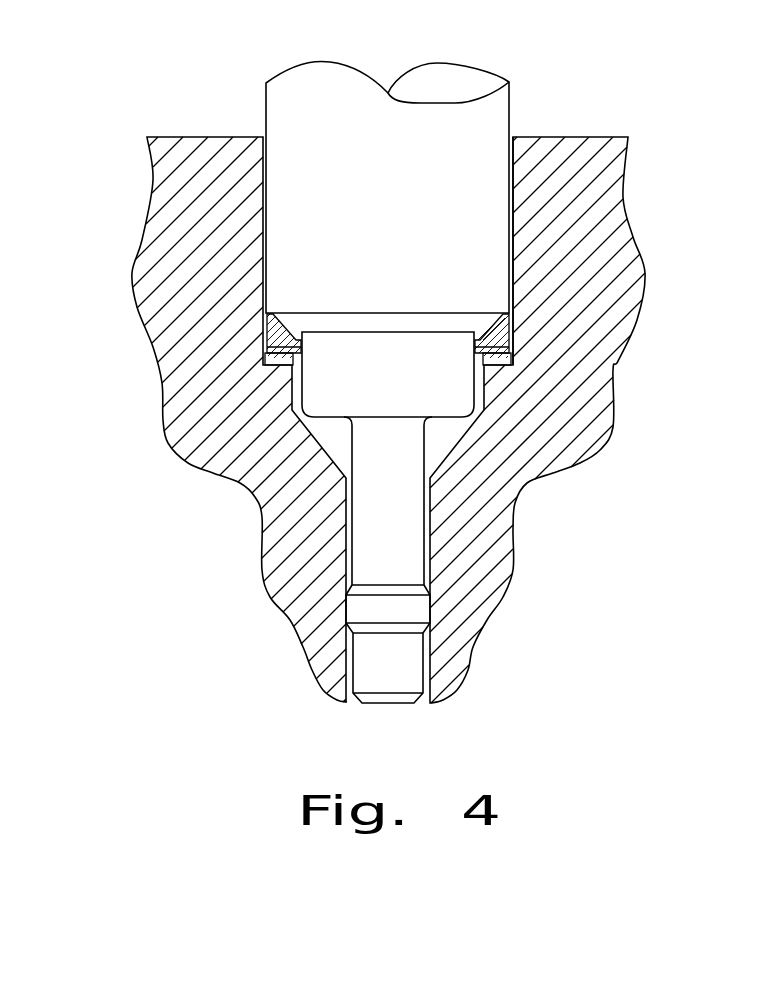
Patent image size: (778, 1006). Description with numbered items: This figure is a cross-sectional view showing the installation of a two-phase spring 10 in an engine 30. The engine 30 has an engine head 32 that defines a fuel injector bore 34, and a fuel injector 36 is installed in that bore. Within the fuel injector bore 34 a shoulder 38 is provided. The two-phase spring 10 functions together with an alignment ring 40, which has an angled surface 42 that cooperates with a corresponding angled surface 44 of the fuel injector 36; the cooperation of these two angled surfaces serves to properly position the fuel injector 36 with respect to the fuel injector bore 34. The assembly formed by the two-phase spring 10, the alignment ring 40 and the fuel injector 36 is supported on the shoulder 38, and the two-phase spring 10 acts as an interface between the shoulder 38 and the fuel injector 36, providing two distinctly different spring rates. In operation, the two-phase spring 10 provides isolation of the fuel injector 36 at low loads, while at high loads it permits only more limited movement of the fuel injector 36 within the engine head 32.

The two-phase spring 10 is at (473, 358).
The engine 30 is at (139, 83).
The engine head 32 is at (170, 223).
The fuel injector bore 34 is at (517, 130).
The fuel injector 36 is at (315, 80).
The shoulder 38 is at (499, 366).
The alignment ring 40 is at (493, 328).
The angled surface 42 is at (267, 337).
The angled surface 44 is at (280, 313).